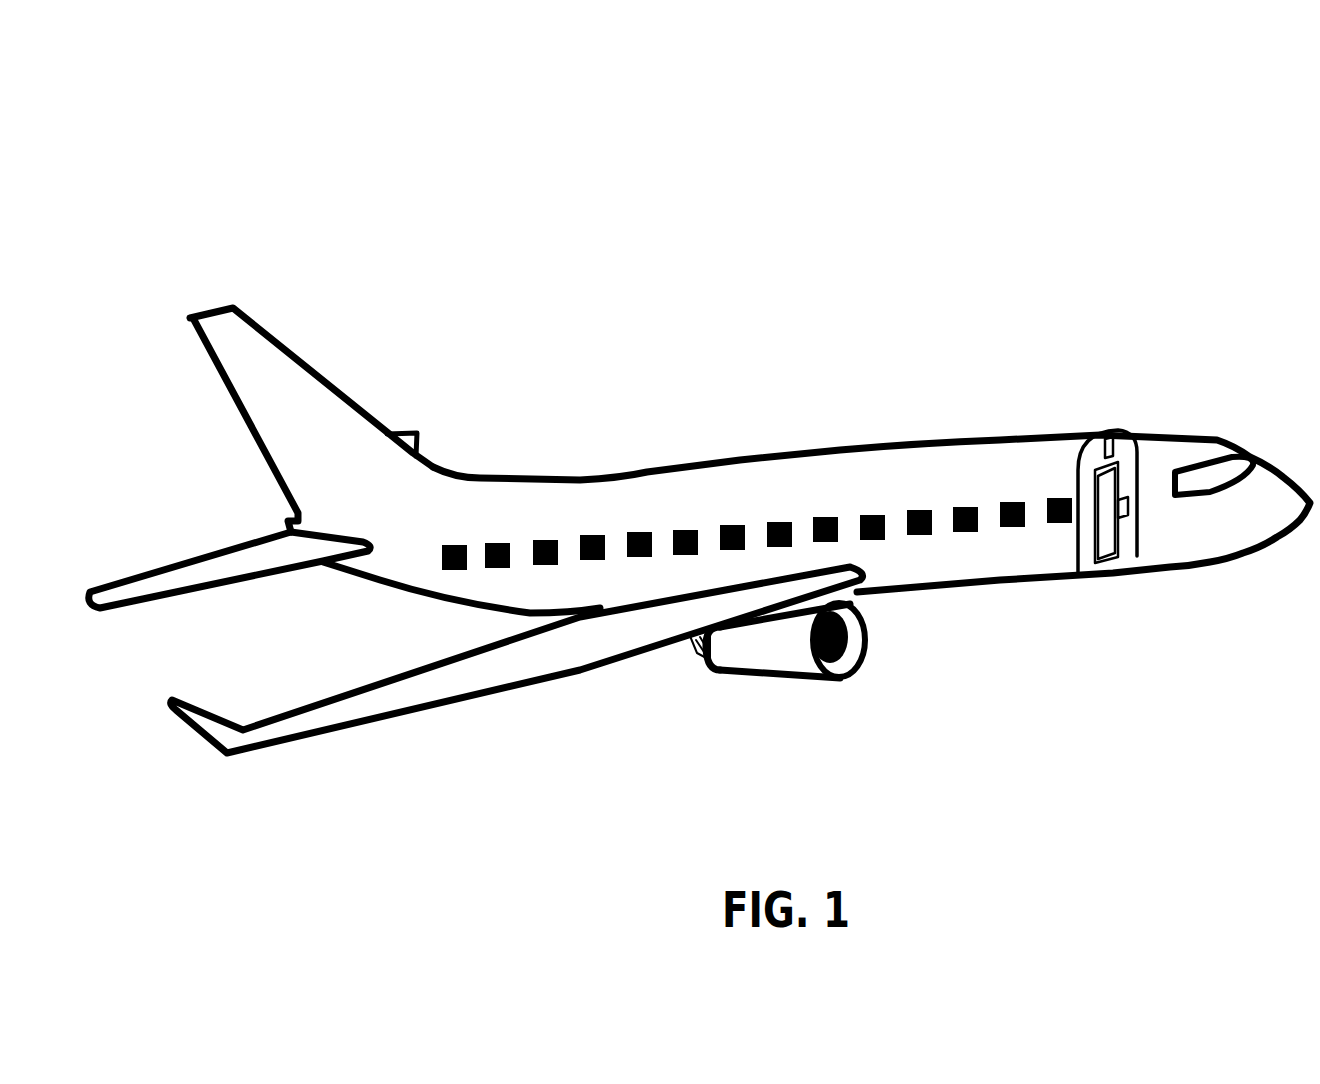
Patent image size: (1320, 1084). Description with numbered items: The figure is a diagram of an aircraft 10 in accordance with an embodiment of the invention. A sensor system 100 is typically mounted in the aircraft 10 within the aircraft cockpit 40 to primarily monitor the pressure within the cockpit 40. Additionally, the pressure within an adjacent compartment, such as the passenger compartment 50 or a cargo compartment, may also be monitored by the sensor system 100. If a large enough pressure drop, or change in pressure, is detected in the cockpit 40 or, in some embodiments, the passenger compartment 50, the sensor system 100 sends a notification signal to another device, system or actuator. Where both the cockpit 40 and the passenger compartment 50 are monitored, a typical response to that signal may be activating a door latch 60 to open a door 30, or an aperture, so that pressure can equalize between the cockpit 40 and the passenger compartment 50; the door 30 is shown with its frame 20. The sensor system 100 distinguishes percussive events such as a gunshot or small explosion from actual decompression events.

The aircraft 10 is at (523, 232).
The door opening 20 is at (1078, 473).
The door 30 is at (1095, 518).
The aircraft cockpit 40 is at (1165, 452).
The passenger compartment 50 is at (600, 515).
The door latch 60 is at (1128, 510).
The sensor system 100 is at (1093, 536).